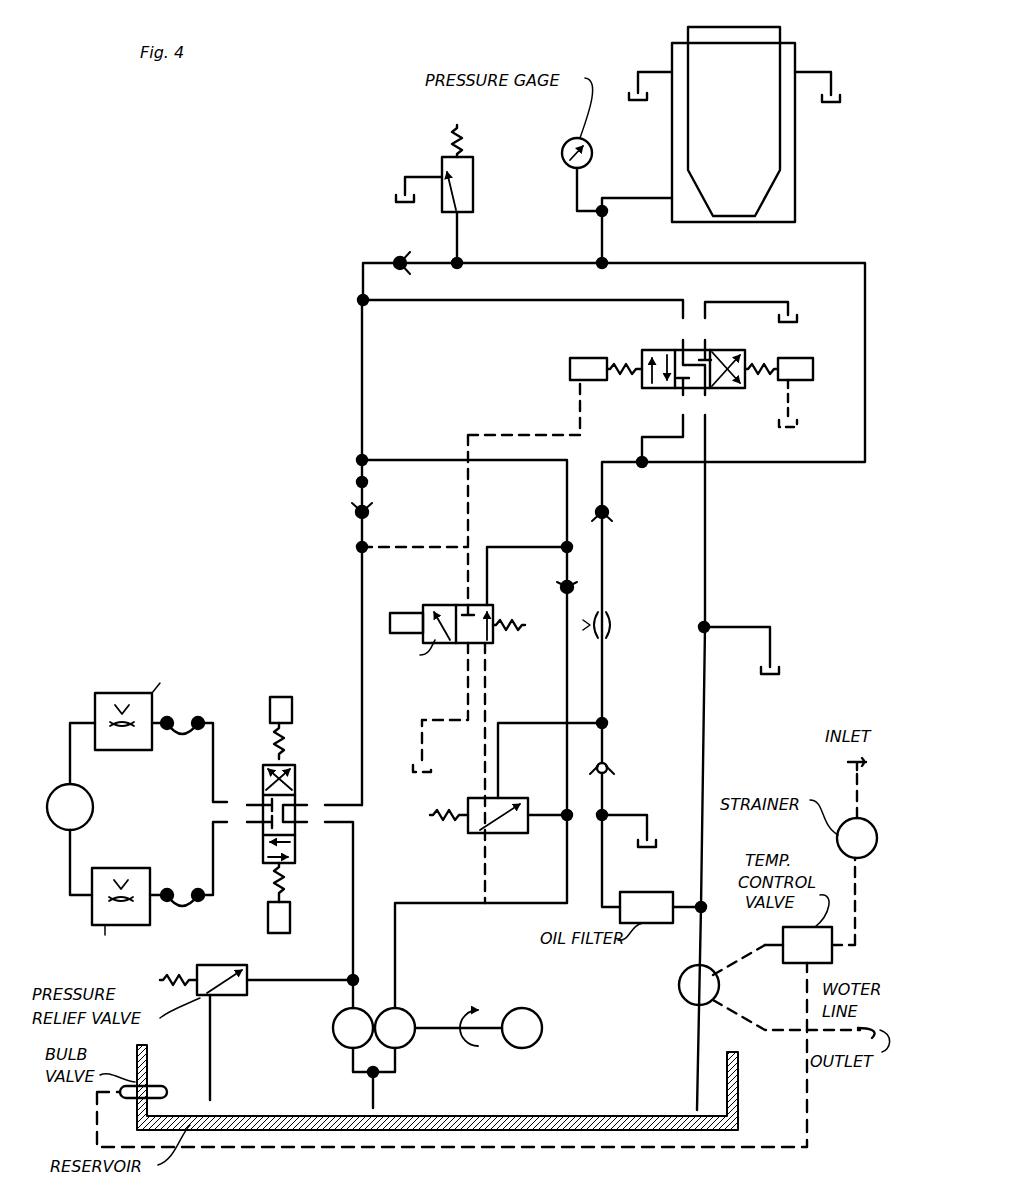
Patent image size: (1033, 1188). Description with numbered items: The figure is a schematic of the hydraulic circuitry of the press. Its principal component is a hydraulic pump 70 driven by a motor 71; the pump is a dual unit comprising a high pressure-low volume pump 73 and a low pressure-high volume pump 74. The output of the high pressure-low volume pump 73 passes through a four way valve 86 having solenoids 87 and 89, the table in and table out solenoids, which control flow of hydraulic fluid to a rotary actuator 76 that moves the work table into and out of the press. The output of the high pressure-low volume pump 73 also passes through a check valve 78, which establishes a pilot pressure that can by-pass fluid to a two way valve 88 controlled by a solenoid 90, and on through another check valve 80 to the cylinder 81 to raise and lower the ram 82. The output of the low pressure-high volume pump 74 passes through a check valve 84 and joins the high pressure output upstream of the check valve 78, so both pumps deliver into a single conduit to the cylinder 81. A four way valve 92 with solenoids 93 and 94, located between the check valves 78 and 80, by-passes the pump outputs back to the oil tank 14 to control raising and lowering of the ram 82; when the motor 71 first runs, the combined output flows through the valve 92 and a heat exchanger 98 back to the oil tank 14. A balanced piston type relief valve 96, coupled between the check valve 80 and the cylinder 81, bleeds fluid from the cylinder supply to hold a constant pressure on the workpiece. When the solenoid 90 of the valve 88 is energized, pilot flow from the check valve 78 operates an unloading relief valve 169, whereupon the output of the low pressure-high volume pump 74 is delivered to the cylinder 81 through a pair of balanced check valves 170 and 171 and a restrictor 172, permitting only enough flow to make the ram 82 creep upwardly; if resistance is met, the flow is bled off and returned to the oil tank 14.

The balanced piston type relief valve 96 is at (442, 163).
The check valve 80 is at (396, 256).
The ram 82 is at (734, 121).
The cylinder 81 is at (836, 165).
The four way valve 92 is at (660, 350).
The solenoid 93 is at (570, 369).
The solenoid 94 is at (835, 340).
The check valve 78 is at (355, 512).
The check valve 170 is at (610, 498).
The restrictor 172 is at (615, 622).
The check valve 171 is at (630, 756).
The two way valve 88 is at (445, 605).
The solenoid 90 is at (402, 613).
The check valve 84 is at (565, 588).
The unloading relief valve 169 is at (495, 832).
The rotary actuator 76 is at (93, 800).
The four way valve 86 is at (315, 852).
The solenoid 89 is at (290, 708).
The solenoid 87 is at (299, 898).
The hydraulic pump 70 is at (394, 1025).
The high pressure-low volume pump 73 is at (335, 1040).
The low pressure-high volume pump 74 is at (410, 1038).
The motor 71 is at (522, 1045).
The oil tank 14 is at (560, 1117).
The heat exchanger 98 is at (678, 988).